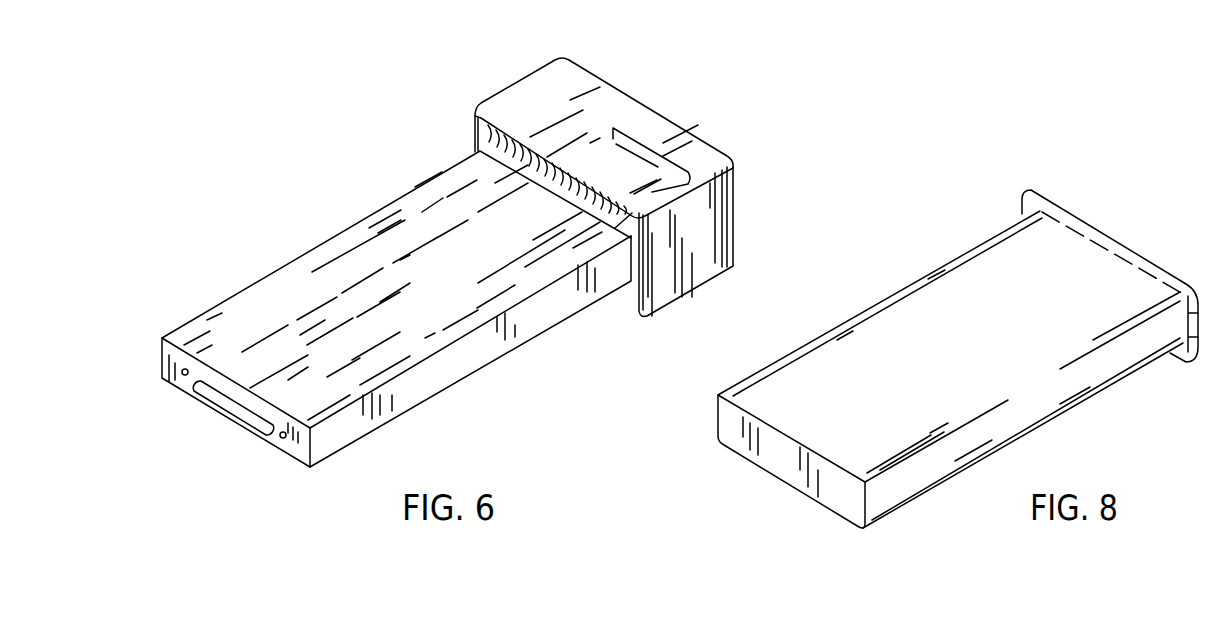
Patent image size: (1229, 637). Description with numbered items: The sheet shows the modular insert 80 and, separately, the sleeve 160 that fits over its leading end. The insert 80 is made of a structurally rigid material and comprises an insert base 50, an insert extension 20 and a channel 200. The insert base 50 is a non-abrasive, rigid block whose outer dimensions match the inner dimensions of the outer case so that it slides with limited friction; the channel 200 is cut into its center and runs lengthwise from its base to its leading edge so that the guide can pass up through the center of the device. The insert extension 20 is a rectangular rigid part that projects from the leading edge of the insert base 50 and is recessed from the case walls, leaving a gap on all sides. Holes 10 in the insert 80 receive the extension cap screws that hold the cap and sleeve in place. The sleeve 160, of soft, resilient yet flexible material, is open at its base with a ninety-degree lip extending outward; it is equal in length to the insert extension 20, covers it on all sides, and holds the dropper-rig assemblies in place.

In FIG. 6, the holes 10 is at (182, 372).
In FIG. 6, the insert extension 20 is at (478, 348).
In FIG. 6, the insert base 50 is at (528, 108).
In FIG. 6, the insert 80 is at (467, 150).
In FIG. 6, the channel 200 is at (248, 407).
In FIG. 8, the sleeve 160 is at (967, 313).